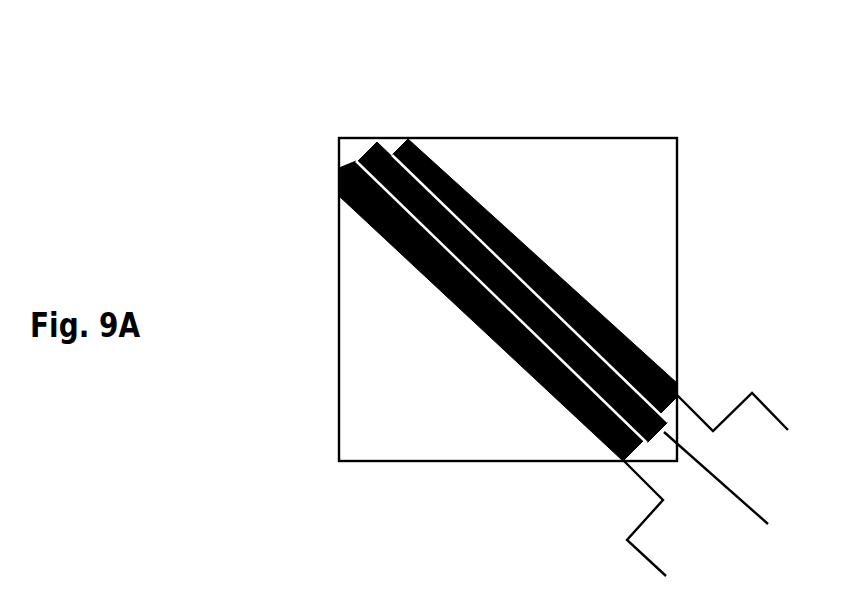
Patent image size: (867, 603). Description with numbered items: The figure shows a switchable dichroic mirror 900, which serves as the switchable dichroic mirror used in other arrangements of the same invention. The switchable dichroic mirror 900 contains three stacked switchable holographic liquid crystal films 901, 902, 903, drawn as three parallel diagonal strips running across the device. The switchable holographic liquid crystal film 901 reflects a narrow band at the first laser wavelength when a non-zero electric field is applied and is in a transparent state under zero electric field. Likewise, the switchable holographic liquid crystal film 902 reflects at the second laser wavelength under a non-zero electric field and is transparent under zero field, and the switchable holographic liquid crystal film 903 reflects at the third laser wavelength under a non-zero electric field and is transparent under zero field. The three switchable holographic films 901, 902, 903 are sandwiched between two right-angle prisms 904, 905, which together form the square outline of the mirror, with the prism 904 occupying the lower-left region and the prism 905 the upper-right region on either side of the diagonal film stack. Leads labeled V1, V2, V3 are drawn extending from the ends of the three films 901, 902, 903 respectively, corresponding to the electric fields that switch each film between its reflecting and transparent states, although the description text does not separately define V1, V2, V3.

The switchable dichroic mirror 900 is at (414, 297).
The switchable holographic liquid crystal film 901 is at (347, 187).
The switchable holographic liquid crystal film 902 is at (367, 143).
The switchable holographic liquid crystal film 903 is at (442, 163).
The right-angle prism 904 is at (508, 299).
The right-angle prism 905 is at (539, 212).
The first voltage terminal V1 is at (656, 518).
The second voltage terminal V2 is at (727, 498).
The third voltage terminal V3 is at (736, 433).